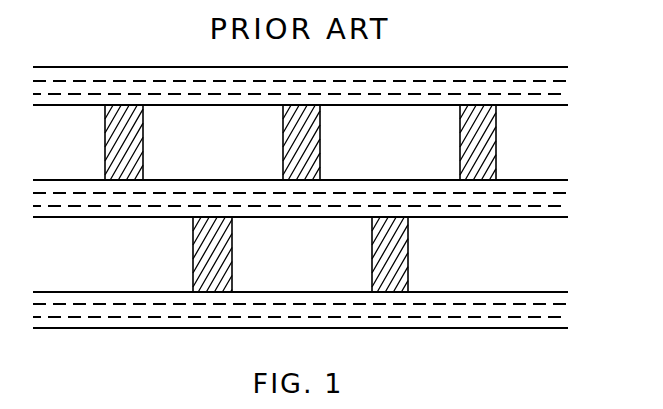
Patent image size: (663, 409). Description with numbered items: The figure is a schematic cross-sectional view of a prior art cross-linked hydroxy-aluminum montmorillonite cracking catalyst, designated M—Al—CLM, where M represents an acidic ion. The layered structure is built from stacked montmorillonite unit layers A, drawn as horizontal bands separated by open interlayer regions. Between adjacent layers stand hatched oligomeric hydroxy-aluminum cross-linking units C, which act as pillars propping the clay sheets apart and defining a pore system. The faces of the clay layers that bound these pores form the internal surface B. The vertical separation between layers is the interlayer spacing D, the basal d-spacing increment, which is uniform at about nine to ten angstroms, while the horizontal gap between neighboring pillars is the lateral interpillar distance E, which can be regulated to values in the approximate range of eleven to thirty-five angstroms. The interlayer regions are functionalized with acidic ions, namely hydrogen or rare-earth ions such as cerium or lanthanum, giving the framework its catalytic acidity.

The montmorillonite unit layer A is at (312, 197).
The internal surface B is at (544, 108).
The oligomeric hydroxy-aluminum cross-linking unit C is at (300, 198).
The interlayer spacing D is at (43, 108).
The lateral (interpillar) distance E is at (280, 174).